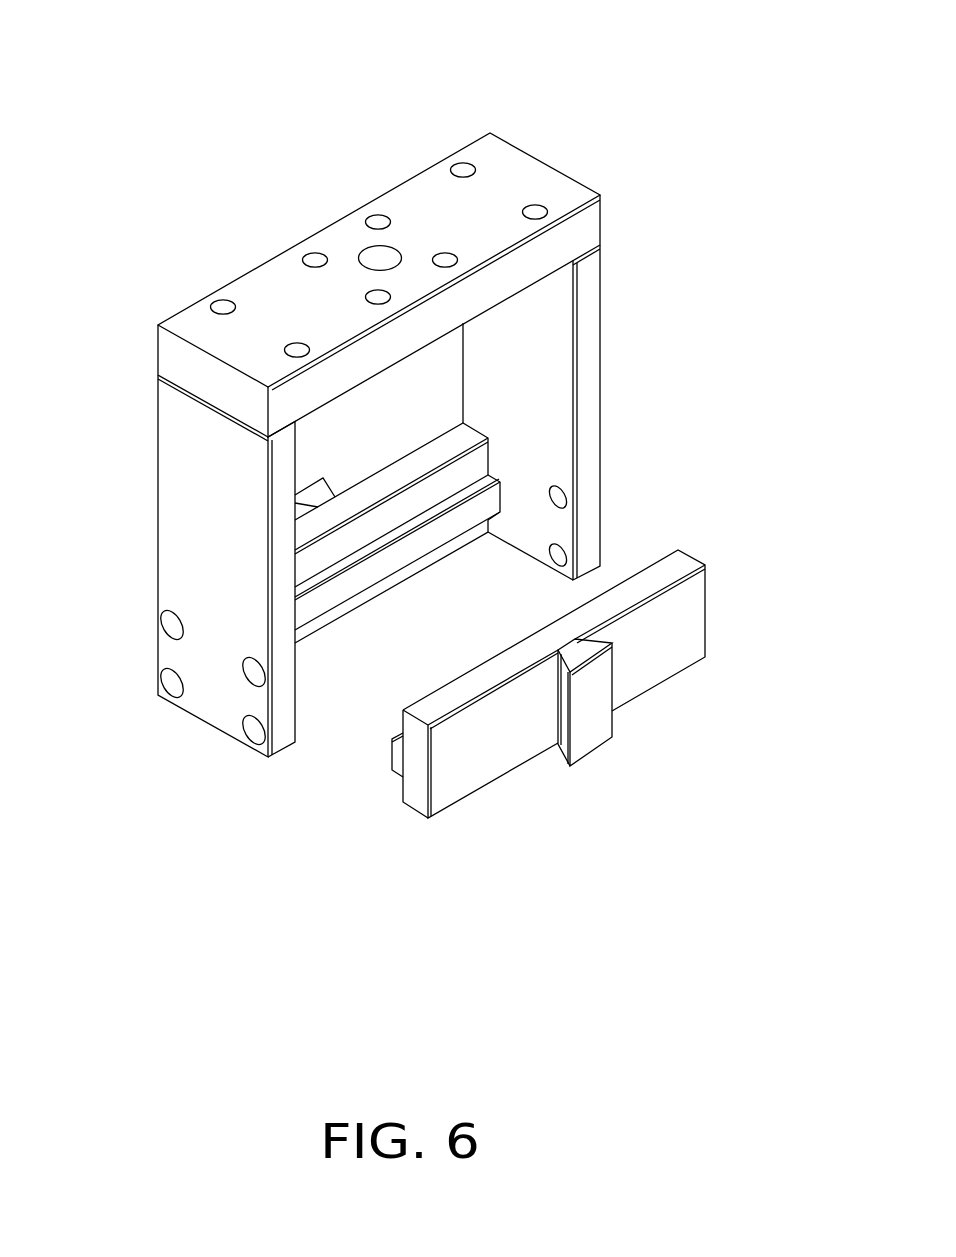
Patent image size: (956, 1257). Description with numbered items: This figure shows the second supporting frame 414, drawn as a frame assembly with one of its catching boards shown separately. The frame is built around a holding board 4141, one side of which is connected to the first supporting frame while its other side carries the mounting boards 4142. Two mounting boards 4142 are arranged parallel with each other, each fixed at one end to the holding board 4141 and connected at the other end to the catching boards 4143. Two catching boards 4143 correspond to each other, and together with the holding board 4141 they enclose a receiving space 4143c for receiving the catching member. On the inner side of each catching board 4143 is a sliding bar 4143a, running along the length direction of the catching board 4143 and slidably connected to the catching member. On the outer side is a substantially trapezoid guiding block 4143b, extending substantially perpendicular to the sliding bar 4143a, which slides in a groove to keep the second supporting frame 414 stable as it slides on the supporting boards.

The second supporting frame 414 is at (435, 427).
The holding board 4141 is at (428, 193).
The mounting board 4142 is at (588, 313).
The catching board 4143 is at (553, 619).
The sliding bar 4143a is at (483, 507).
The guiding block 4143b is at (603, 725).
The receiving space 4143c is at (325, 662).